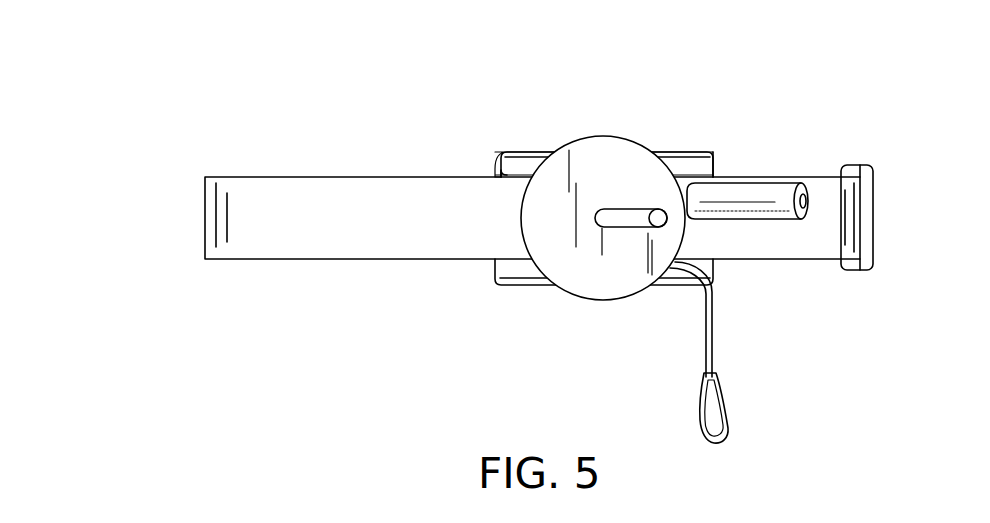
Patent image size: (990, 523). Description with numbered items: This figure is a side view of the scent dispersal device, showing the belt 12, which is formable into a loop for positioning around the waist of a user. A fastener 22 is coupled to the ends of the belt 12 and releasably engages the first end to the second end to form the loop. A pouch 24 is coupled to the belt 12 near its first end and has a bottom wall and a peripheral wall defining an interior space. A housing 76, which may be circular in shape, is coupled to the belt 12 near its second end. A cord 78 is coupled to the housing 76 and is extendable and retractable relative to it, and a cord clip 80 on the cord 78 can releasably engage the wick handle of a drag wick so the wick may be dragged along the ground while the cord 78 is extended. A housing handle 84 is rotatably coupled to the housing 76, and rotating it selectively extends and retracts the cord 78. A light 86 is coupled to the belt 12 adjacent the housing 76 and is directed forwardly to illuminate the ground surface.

The belt 12 is at (227, 218).
The fastener 22 is at (865, 170).
The pouch 24 is at (683, 165).
The housing 76 is at (592, 294).
The cord 78 is at (706, 332).
The cord clip 80 is at (730, 432).
The housing handle 84 is at (643, 209).
The light 86 is at (772, 193).